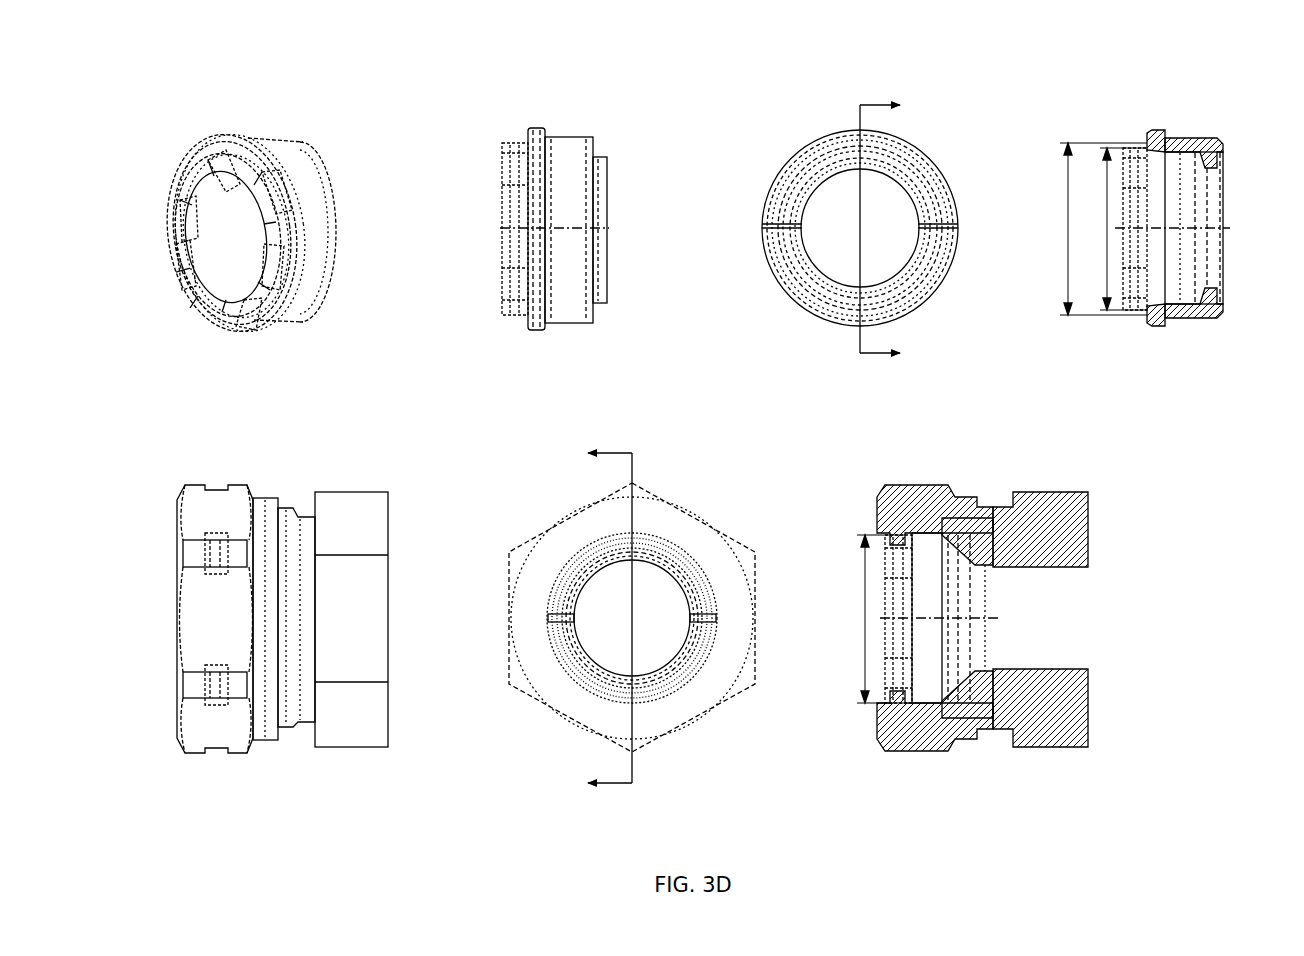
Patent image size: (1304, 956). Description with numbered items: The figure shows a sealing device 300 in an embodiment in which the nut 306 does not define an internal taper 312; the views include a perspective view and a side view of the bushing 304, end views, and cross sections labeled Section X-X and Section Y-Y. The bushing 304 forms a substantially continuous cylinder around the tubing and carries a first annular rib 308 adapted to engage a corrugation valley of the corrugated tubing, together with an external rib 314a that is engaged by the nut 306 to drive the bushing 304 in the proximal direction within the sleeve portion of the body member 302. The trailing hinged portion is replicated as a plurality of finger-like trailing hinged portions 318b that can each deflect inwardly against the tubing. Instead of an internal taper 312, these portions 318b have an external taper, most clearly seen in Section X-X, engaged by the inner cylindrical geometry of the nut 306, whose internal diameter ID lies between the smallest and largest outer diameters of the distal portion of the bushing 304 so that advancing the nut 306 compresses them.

The sealing device 300 is at (157, 461).
The body member 302 is at (383, 748).
The bushing 304 is at (158, 108).
The nut 306 is at (207, 753).
The first annular rib 308 is at (1214, 286).
The internal taper 312 is at (1152, 131).
The external rib 314a is at (176, 178).
The finger-like trailing hinged portion 318b is at (176, 236).